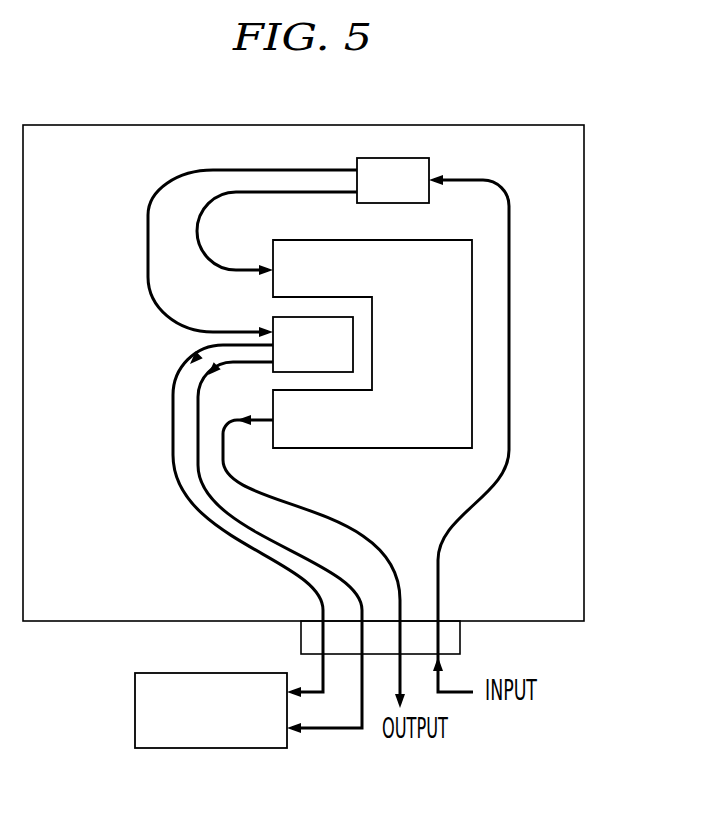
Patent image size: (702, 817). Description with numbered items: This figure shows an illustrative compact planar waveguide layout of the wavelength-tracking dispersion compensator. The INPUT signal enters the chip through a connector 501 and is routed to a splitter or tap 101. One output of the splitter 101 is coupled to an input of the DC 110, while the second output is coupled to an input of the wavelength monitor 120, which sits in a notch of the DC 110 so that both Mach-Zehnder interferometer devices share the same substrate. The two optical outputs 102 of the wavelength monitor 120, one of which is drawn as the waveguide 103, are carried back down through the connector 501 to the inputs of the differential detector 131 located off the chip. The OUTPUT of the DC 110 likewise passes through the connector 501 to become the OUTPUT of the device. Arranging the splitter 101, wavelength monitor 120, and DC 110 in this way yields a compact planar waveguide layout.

The splitter or tap 101 is at (393, 180).
The optical outputs of the wavelength monitor 102 is at (233, 365).
The first optical path 103 is at (178, 383).
The DC 110 is at (372, 344).
The wavelength monitor 120 is at (313, 344).
The differential detector 131 is at (211, 710).
The connector 501 is at (462, 636).